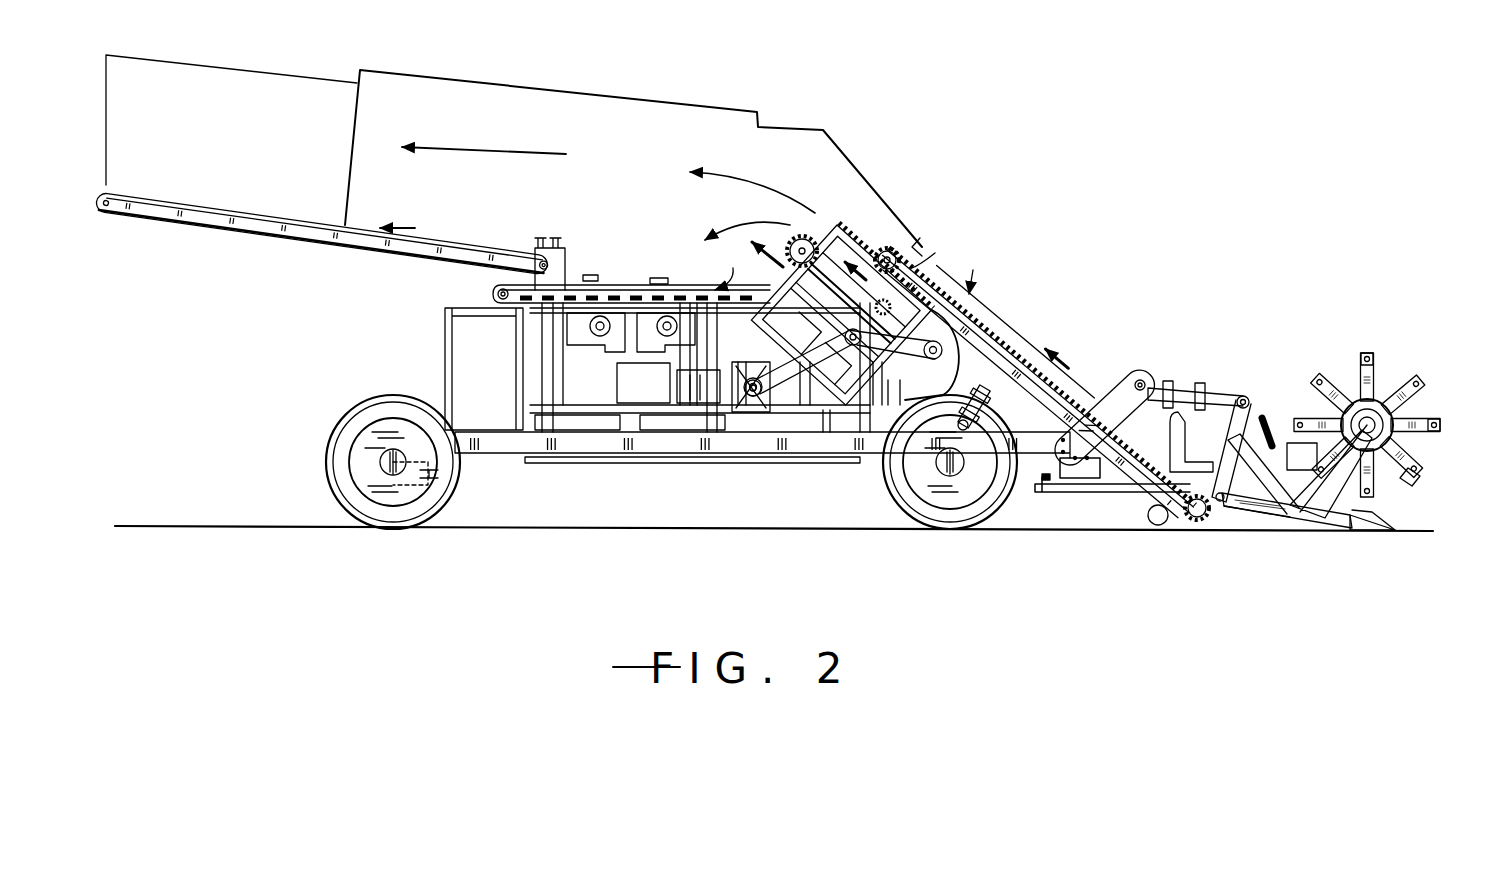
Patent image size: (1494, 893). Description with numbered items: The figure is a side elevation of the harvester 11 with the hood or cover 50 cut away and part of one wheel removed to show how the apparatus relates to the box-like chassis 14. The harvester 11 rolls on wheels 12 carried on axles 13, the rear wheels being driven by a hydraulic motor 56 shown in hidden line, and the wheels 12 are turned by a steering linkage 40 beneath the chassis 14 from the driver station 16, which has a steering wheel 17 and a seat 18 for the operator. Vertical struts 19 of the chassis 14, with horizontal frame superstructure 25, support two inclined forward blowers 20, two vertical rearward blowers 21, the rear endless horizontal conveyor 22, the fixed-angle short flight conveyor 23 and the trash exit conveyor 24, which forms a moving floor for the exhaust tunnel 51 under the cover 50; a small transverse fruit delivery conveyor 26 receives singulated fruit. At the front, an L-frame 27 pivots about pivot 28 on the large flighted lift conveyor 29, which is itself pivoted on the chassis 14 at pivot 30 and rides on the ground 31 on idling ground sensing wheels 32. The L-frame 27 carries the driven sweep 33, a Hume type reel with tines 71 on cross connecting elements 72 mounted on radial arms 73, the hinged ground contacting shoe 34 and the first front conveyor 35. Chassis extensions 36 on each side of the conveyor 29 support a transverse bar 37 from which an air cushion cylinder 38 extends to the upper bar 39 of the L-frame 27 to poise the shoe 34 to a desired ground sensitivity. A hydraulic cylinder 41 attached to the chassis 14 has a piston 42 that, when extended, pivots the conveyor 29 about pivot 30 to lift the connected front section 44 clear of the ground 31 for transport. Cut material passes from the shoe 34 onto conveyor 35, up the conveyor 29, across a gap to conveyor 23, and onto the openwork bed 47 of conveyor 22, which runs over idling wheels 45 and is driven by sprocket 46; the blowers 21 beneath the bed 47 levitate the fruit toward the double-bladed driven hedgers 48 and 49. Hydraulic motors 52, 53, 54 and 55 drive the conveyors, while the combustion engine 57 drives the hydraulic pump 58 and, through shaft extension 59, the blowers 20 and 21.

The harvester 11 is at (1100, 222).
The wheels 12 is at (325, 465).
The axles 13 is at (383, 455).
The chassis 14 is at (725, 455).
The driver station 16 is at (1280, 380).
The steering wheel 17 is at (1270, 444).
The seat 18 is at (1180, 458).
The vertical struts 19 is at (450, 335).
The inclined forward blowers 20 is at (851, 314).
The vertical rearward blowers 21 is at (645, 343).
The rear endless horizontal conveyor 22 is at (490, 293).
The fixed-angle short flight endless conveyor 23 is at (818, 235).
The trash or debris exit endless conveyor 24 is at (228, 204).
The frame superstructure 25 is at (600, 316).
The fruit delivery conveyor 26 is at (438, 297).
The L-frame 27 is at (1285, 522).
The pivot 28 is at (1213, 510).
The flighted endless conveyor 29 is at (1042, 352).
The pivot 30 is at (897, 252).
The ground 31 is at (600, 527).
The ground sensing wheels 32 is at (1150, 522).
The driven sweep 33 is at (1433, 411).
The ground contacting shoe 34 is at (1398, 527).
The front conveyor 35 is at (1238, 513).
The chassis extensions 36 is at (1085, 405).
The transverse bar 37 is at (1143, 380).
The air cushion cylinder 38 is at (1190, 380).
The upper bar 39 is at (1250, 397).
The steering linkage 40 is at (1082, 475).
The hydraulic cylinder 41 is at (972, 424).
The piston 42 is at (973, 401).
The front section 44 is at (1396, 380).
The idling wheels 45 is at (535, 322).
The drive sprocket 46 is at (742, 415).
The openwork bed 47 is at (735, 267).
The double-bladed driven hedger 48 is at (662, 276).
The double-bladed driven hedger 49 is at (600, 276).
The hood or cover 50 is at (484, 76).
The exhaust tunnel 51 is at (330, 120).
The hydraulic motor 52 is at (1196, 522).
The hydraulic motor 53 is at (690, 420).
The hydraulic motor 54 is at (942, 258).
The hydraulic motor 55 is at (575, 268).
The hydraulic motor 56 is at (438, 488).
The combustion engine 57 is at (826, 435).
The hydraulic pump 58 is at (755, 380).
The shaft extension 59 is at (770, 412).
The tines 71 is at (1412, 497).
The cross connecting elements 72 is at (1445, 427).
The radial arms 73 is at (1360, 365).